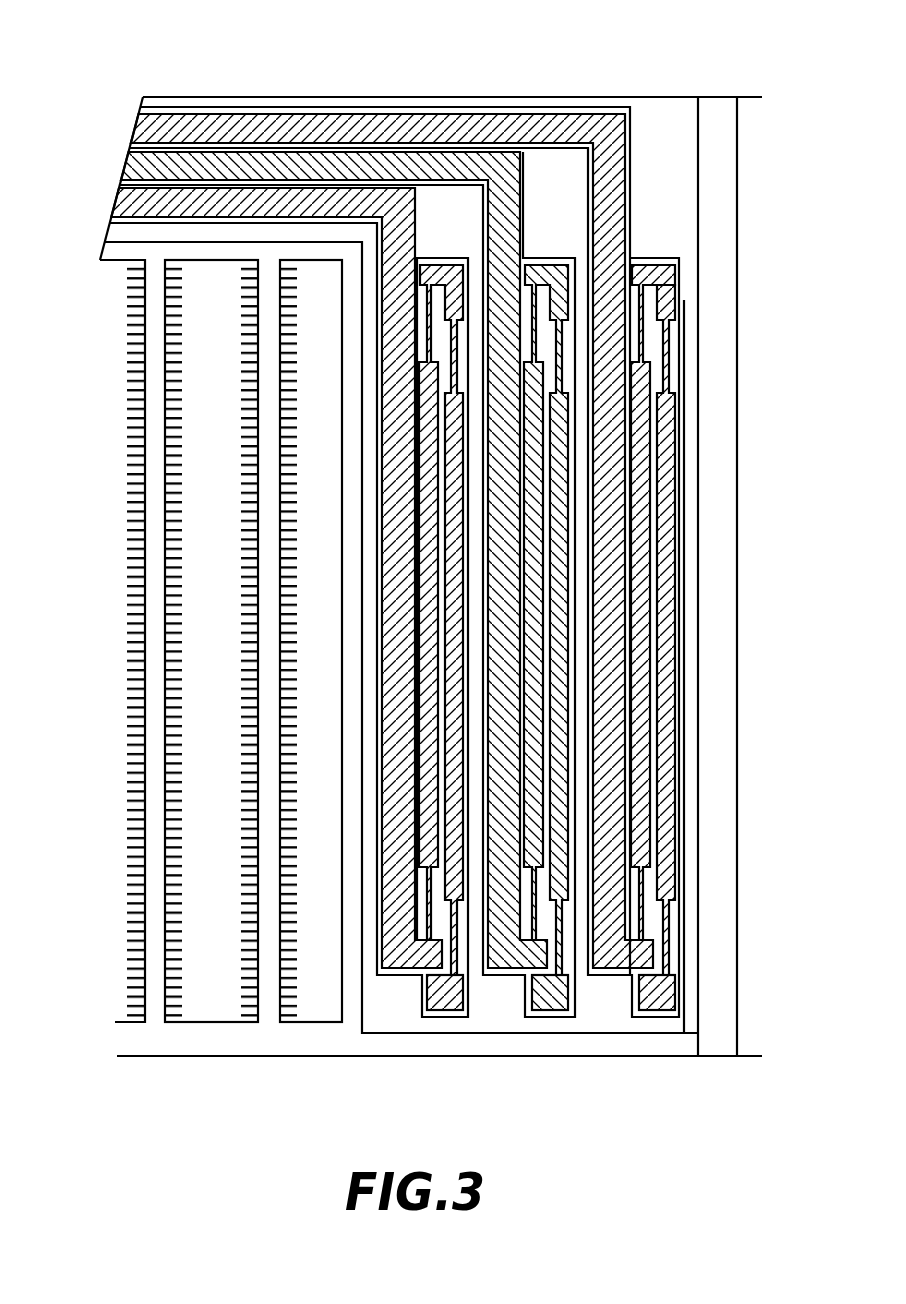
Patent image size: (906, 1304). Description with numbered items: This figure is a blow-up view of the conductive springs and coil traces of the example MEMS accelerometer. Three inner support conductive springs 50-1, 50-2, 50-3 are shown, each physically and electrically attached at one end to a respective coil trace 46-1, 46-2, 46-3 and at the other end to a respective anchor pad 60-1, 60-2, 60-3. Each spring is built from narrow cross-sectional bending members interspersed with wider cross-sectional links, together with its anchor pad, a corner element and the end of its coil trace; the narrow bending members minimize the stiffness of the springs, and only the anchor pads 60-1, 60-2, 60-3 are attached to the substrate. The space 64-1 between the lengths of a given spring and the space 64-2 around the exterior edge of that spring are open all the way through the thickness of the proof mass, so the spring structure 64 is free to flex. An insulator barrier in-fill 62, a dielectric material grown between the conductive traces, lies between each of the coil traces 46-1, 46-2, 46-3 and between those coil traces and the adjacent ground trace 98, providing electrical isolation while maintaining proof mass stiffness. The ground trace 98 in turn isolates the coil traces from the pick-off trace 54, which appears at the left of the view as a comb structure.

The insulator barrier in-fill 62 is at (147, 110).
The coil trace 46-1 is at (145, 127).
The coil trace 46-2 is at (135, 167).
The coil trace 46-3 is at (125, 203).
The inner support conductive spring 50-1 is at (653, 273).
The inner support conductive spring 50-2 is at (547, 273).
The inner support conductive spring 50-3 is at (443, 273).
The conductive electrode 64 is at (478, 580).
The space between the lengths of a conductive spring 64-1 is at (641, 330).
The space around an exterior edge of a conductive spring 64-2 is at (664, 362).
The anchor pad 60-1 is at (653, 1002).
The anchor pad 60-2 is at (551, 1002).
The anchor pad 60-3 is at (447, 1002).
The pick-off trace 54 is at (222, 1038).
The ground trace 98 is at (385, 1012).